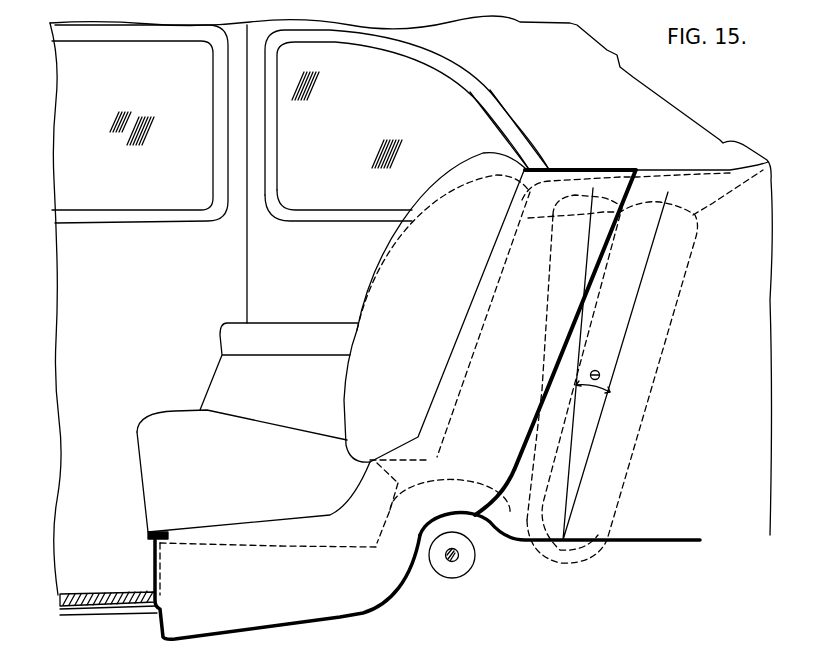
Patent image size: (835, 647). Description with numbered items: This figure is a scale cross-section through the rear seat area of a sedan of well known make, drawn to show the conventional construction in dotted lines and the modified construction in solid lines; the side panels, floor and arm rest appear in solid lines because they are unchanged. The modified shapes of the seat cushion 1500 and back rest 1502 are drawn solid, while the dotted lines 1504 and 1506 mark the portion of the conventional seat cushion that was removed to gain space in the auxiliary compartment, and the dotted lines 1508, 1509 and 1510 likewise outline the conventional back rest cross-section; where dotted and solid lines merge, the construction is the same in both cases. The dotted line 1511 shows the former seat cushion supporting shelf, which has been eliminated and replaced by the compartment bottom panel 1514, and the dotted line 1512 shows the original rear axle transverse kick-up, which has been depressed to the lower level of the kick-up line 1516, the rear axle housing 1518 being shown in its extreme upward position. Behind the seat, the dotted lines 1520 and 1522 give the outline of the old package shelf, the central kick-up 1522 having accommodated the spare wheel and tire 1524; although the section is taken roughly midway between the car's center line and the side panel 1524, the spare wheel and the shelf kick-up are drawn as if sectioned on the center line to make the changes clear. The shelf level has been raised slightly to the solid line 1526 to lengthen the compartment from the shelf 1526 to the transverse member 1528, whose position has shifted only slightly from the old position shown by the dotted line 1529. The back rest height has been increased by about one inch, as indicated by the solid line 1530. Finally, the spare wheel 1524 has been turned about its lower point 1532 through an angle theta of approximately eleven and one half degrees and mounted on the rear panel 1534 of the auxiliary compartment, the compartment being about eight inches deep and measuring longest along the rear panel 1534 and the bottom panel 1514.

The seat cushion 1500 is at (152, 427).
The back rest 1502 is at (468, 152).
The dotted line of conventional seat cushion 1504 is at (298, 540).
The dotted line of conventional seat cushion 1506 is at (387, 507).
The dotted line of conventional back rest 1508 is at (413, 460).
The dotted line of conventional back rest 1509 is at (455, 403).
The dotted line of conventional back rest 1510 is at (408, 238).
The seat cushion supporting shelf 1511 is at (252, 548).
The rear axle transverse kick-up 1512 is at (460, 482).
The compartment bottom panel 1514 is at (240, 628).
The kick-up line 1516 is at (440, 520).
The rear axle housing 1518 is at (477, 555).
The package shelf outline 1520 is at (712, 205).
The central kick-up of package shelf 1522 is at (680, 175).
The spare wheel and tire 1524 is at (263, 273).
The package shelf 1526 is at (602, 168).
The transverse member 1528 is at (150, 560).
The old position of transverse member 1529 is at (160, 575).
The increased back rest height line 1530 is at (513, 153).
The lower point of spare wheel 1532 is at (590, 552).
The rear panel 1534 is at (522, 448).